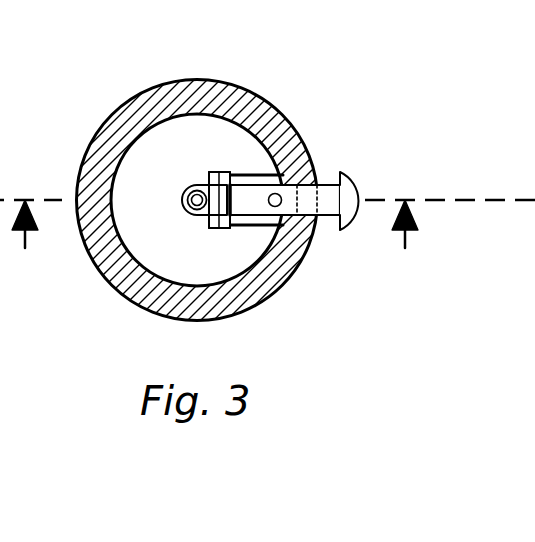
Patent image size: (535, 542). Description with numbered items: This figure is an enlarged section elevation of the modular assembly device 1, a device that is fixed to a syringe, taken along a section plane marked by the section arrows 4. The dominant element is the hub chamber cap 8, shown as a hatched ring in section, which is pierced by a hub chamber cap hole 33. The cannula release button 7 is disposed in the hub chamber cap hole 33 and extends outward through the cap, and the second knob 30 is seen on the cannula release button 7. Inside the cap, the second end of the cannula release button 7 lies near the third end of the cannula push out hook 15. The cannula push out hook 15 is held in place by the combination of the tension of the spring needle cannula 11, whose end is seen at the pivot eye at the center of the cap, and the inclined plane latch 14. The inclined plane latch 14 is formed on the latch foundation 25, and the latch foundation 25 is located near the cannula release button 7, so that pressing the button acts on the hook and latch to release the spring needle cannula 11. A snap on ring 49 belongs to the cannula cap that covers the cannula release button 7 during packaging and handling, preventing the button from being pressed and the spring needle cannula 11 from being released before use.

The modular assembly device 1 is at (245, 185).
The section line 4 is at (267, 240).
The cannula release button 7 is at (331, 165).
The hub chamber cap 8 is at (82, 173).
The spring needle cannula 11 is at (193, 186).
The inclined plane latch 14 is at (176, 283).
The cannula push out hook 15 is at (218, 171).
The latch foundation 25 is at (221, 228).
The second knob 30 is at (273, 207).
The hub chamber cap hole 33 is at (307, 221).
The snap on ring 49 is at (370, 176).